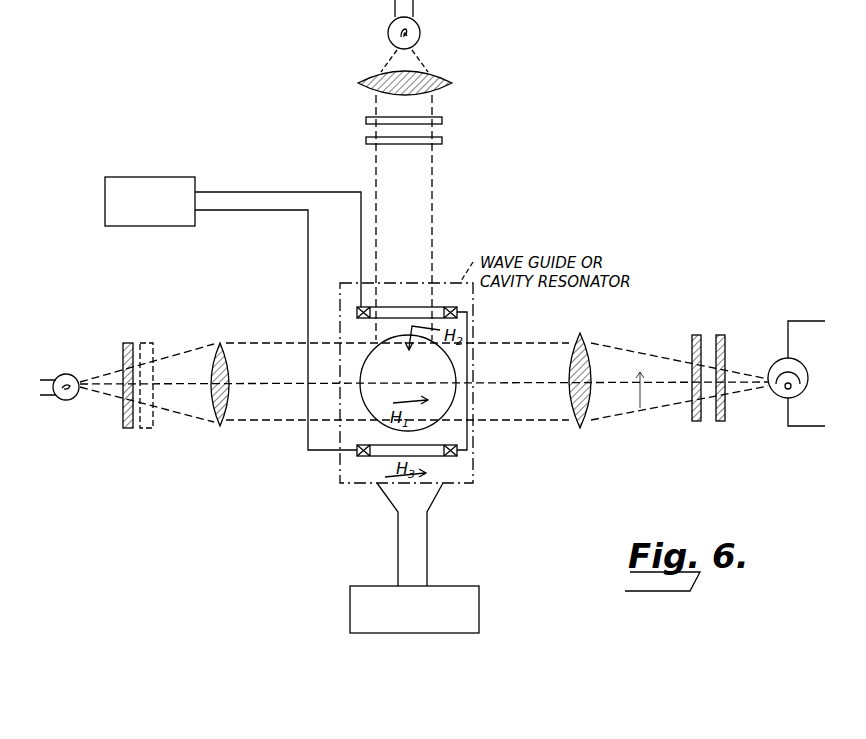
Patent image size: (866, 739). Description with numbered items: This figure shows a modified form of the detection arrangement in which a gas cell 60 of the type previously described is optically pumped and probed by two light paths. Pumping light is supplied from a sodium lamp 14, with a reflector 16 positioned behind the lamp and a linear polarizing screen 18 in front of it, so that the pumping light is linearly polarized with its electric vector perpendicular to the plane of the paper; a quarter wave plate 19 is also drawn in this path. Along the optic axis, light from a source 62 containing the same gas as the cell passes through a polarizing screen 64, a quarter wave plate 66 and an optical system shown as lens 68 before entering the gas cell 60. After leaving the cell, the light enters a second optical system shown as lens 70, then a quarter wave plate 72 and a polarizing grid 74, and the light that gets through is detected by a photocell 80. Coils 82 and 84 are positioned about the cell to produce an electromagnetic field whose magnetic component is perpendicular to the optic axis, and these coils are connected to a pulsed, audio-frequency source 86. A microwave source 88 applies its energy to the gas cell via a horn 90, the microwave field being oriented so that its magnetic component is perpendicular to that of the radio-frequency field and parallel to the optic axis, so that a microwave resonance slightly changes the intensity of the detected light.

The sodium lamp 14 is at (420, 22).
The reflector 16 is at (422, 70).
The linear polarizing screen 18 is at (456, 110).
The quarter wave plate 19 is at (442, 141).
The gas cell 60 is at (386, 424).
The light source 62 is at (62, 352).
The polarizing screen 64 is at (142, 326).
The quarter wave plate 66 is at (155, 340).
The lens 68 is at (246, 330).
The lens 70 is at (584, 338).
The quarter wave plate 72 is at (697, 335).
The polarizing grid 74 is at (720, 335).
The photocell 80 is at (806, 374).
The coil 82 is at (457, 309).
The coil 84 is at (436, 456).
The pulsed audio-frequency source 86 is at (170, 177).
The microwave source 88 is at (487, 582).
The horn 90 is at (432, 500).